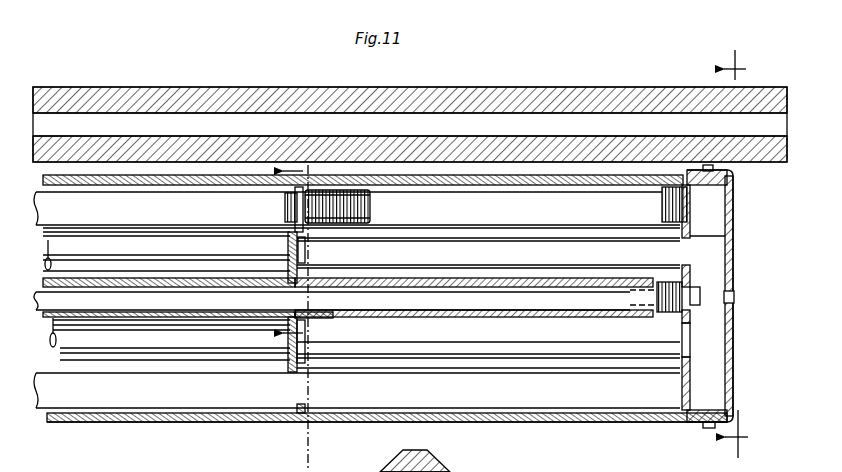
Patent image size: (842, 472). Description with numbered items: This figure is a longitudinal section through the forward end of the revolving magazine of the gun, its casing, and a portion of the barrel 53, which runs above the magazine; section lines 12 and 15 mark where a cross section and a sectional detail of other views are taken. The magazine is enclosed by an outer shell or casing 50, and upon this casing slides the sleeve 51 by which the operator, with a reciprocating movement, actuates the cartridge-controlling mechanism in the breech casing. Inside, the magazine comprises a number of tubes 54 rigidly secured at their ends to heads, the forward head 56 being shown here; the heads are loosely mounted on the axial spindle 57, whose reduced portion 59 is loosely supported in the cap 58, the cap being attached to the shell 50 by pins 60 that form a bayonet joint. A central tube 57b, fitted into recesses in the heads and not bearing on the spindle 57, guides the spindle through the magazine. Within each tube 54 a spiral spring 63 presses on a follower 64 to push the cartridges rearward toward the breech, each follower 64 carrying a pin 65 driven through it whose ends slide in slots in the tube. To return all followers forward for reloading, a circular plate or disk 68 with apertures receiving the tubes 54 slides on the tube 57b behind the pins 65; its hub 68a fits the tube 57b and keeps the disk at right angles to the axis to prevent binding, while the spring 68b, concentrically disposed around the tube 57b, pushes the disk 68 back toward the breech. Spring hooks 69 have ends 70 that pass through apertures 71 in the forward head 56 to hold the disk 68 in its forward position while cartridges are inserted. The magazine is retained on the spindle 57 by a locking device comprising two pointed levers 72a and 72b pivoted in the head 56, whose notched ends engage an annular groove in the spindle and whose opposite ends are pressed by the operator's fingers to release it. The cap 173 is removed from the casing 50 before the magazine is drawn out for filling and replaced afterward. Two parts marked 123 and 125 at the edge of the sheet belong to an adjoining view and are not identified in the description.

The section line 12 is at (747, 254).
The section line 15 is at (310, 316).
The outer shell 50 is at (591, 415).
The sleeve 51 is at (170, 173).
The barrel 53 is at (497, 97).
The tubes 54 is at (78, 246).
The head 56 is at (690, 393).
The axial spindle 57 is at (345, 302).
The central tube 57b is at (348, 278).
The cap 58 is at (734, 326).
The reduced portion 59 is at (734, 294).
The pins 60 is at (710, 428).
The spiral spring 63 is at (349, 192).
The follower 64 is at (286, 200).
The pin 65 is at (309, 190).
The circular plate 68 is at (290, 249).
The hub 68a is at (328, 280).
The spring 68b is at (345, 313).
The spring hooks 69 is at (537, 240).
The ends 70 is at (700, 236).
The apertures 71 is at (690, 340).
The pointed lever 72a is at (697, 280).
The pointed lever 72b is at (700, 310).
The cap 173 is at (733, 210).
The block 123 is at (463, 469).
The block 125 is at (468, 471).